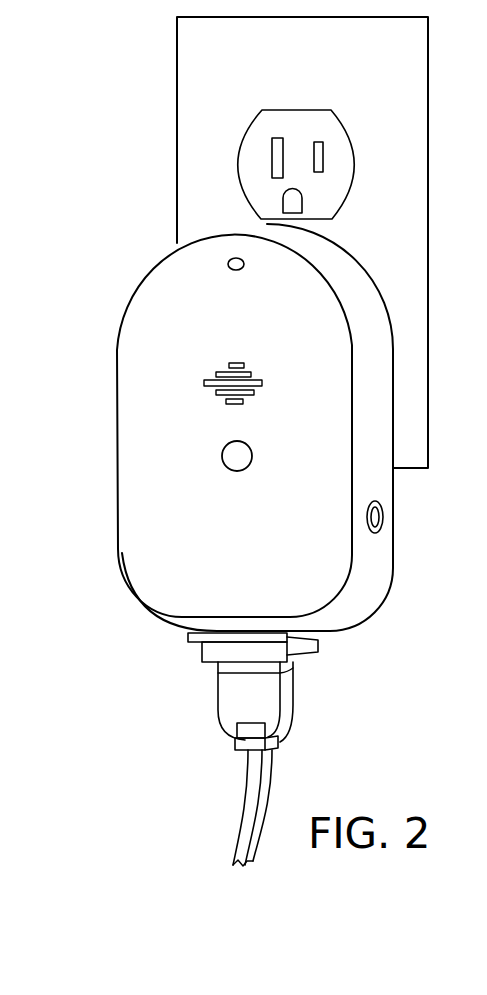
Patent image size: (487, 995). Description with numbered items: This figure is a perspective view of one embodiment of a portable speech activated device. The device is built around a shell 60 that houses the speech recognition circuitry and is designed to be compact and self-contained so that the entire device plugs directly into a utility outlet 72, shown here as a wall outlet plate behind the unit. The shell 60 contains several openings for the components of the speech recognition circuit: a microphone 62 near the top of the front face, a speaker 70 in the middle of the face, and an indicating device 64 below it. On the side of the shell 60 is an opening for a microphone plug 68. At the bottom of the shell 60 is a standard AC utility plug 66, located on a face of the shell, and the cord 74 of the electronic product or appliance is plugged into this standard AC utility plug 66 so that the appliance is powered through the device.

The shell 60 is at (172, 138).
The microphone 62 is at (229, 261).
The indicating device 64 is at (222, 455).
The standard AC utility plug 66 is at (205, 637).
The microphone plug 68 is at (378, 517).
The speaker 70 is at (203, 383).
The utility outlet 72 is at (420, 93).
The appliance cord 74 is at (287, 695).